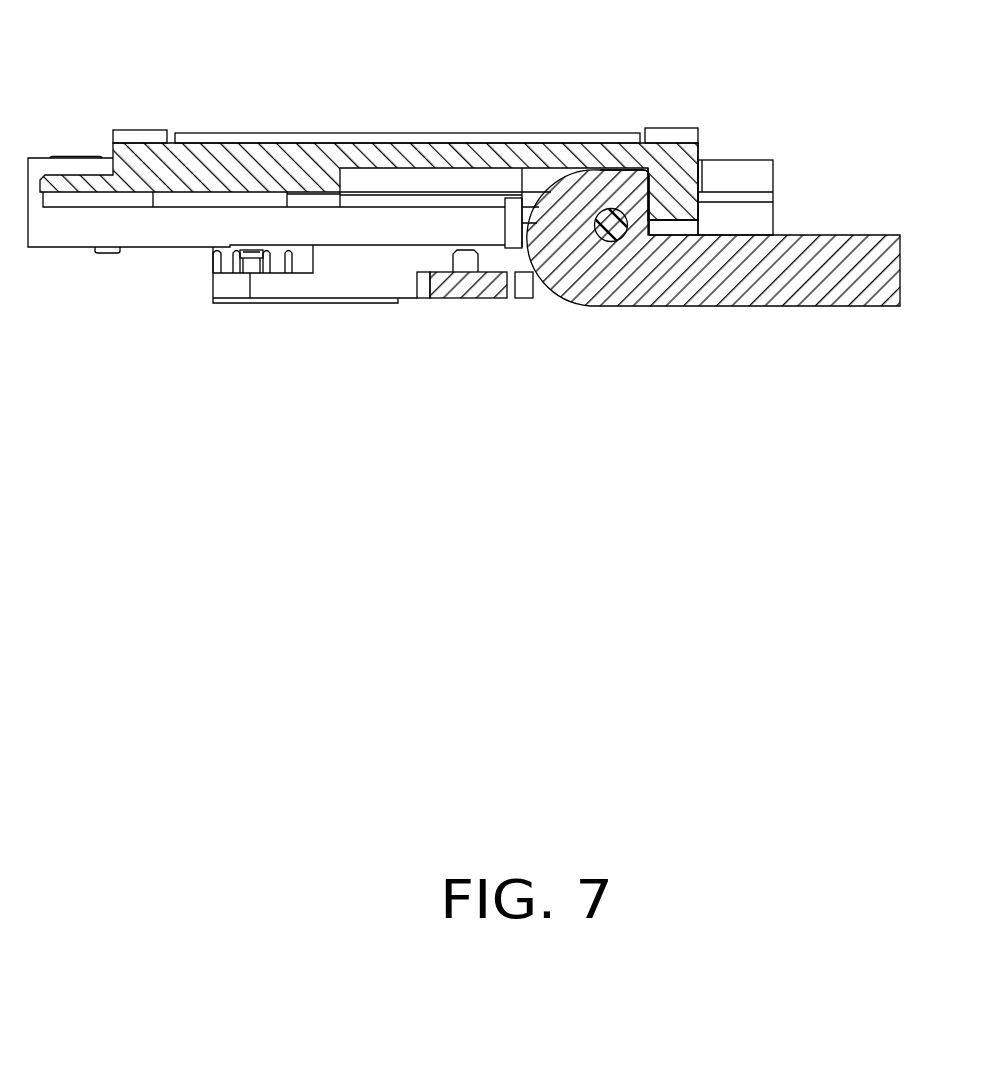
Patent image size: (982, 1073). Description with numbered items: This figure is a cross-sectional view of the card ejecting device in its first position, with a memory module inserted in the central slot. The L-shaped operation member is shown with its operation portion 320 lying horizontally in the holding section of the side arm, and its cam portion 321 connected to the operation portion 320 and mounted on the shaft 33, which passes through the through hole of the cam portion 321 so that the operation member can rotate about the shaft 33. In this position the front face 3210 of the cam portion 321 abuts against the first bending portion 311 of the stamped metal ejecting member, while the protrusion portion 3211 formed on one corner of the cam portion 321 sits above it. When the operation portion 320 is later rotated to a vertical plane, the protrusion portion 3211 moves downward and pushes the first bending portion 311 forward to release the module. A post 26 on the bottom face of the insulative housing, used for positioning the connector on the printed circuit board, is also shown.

The post 26 is at (467, 258).
The first bending portion 311 is at (662, 203).
The operation portion 320 is at (750, 275).
The cam portion 321 is at (563, 248).
The front face 3210 is at (627, 172).
The protrusion portion 3211 is at (636, 194).
The shaft 33 is at (611, 228).